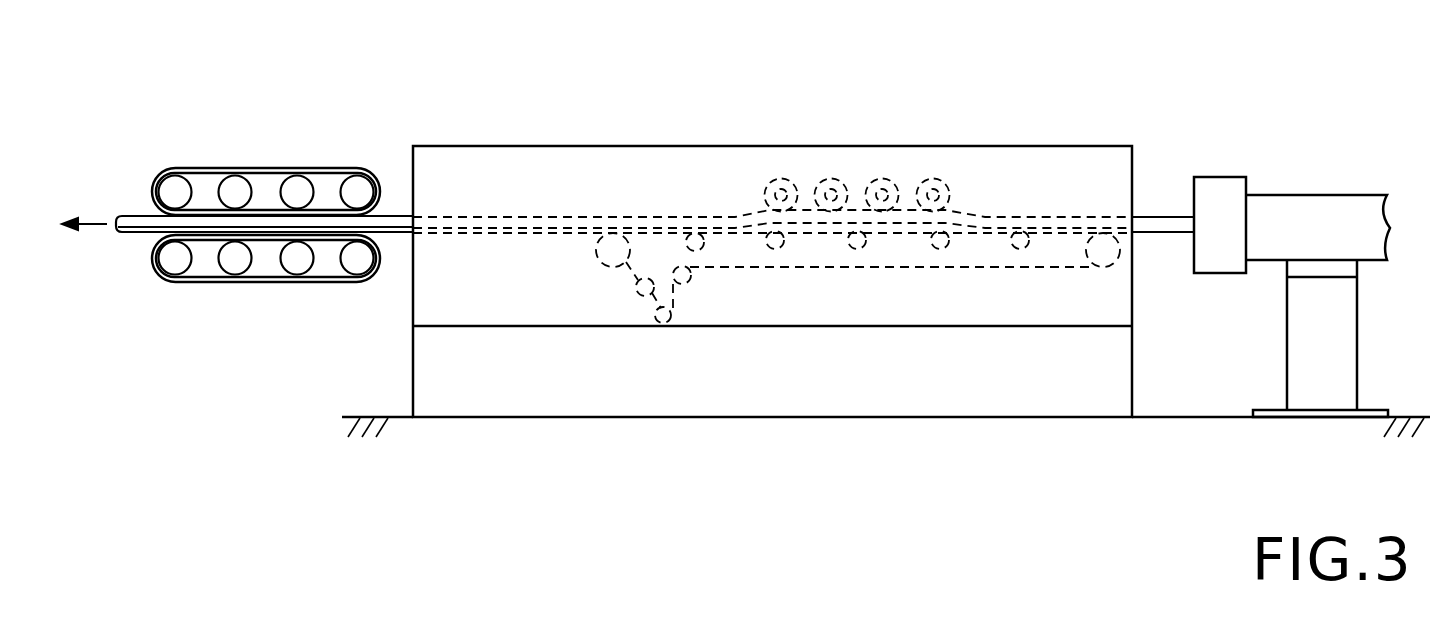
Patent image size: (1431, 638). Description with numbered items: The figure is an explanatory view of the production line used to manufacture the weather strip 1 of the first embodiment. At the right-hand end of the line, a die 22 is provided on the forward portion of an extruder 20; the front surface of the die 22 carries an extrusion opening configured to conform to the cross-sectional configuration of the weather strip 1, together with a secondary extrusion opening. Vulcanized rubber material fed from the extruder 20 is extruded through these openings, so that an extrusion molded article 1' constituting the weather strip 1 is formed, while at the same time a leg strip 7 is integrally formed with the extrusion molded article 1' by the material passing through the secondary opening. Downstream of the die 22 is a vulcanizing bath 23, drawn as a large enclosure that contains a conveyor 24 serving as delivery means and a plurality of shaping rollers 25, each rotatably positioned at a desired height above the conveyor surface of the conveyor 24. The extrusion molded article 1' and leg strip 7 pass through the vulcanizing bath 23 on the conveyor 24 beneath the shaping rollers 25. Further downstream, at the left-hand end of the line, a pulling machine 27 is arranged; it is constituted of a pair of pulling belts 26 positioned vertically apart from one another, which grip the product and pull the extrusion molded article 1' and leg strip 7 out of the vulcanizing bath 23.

The weather strip 1 is at (237, 174).
The extrusion molded article 1' is at (1163, 158).
The leg strip 7 is at (1150, 236).
The extruder 20 is at (1357, 187).
The die 22 is at (1220, 187).
The vulcanizing bath 23 is at (752, 140).
The conveyor 24 is at (862, 268).
The shaping rollers 25 is at (785, 177).
The pulling belts 26 is at (202, 167).
The pulling machine 27 is at (266, 213).